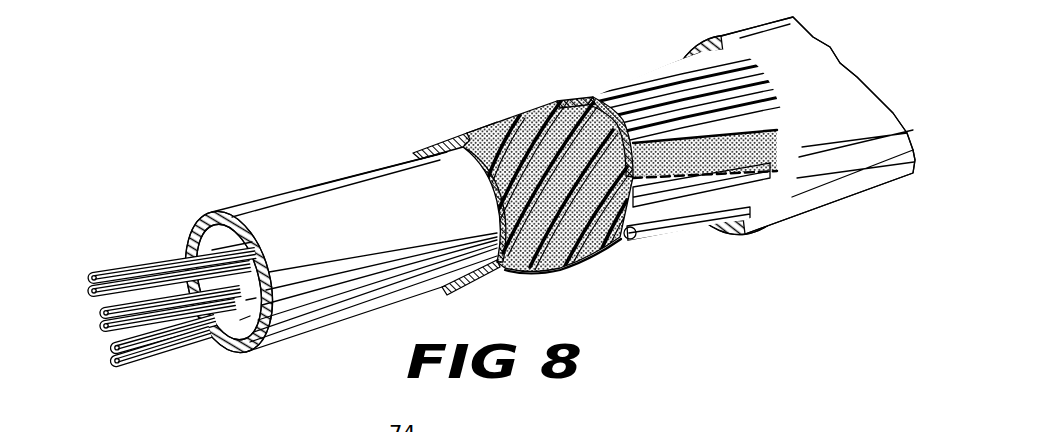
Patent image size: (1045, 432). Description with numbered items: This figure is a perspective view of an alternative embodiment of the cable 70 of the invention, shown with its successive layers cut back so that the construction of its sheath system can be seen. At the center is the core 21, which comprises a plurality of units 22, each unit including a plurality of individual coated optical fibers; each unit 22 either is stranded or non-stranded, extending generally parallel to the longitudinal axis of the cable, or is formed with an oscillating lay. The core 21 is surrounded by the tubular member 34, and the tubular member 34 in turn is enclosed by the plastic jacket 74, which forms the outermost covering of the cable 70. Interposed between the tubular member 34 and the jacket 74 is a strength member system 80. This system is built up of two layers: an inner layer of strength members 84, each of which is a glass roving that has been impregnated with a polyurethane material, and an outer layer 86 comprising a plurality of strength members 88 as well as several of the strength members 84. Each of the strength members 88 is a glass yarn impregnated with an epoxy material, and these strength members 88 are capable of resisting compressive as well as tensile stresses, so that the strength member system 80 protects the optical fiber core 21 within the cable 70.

The core 21 is at (172, 304).
The unit 22 is at (165, 348).
The tubular member 34 is at (381, 173).
The cable 70 is at (283, 177).
The plastic jacket 74 is at (692, 45).
The strength member system 80 is at (511, 86).
The strength members 84 is at (481, 167).
The layer 86 is at (563, 88).
The strength members 88 is at (757, 97).